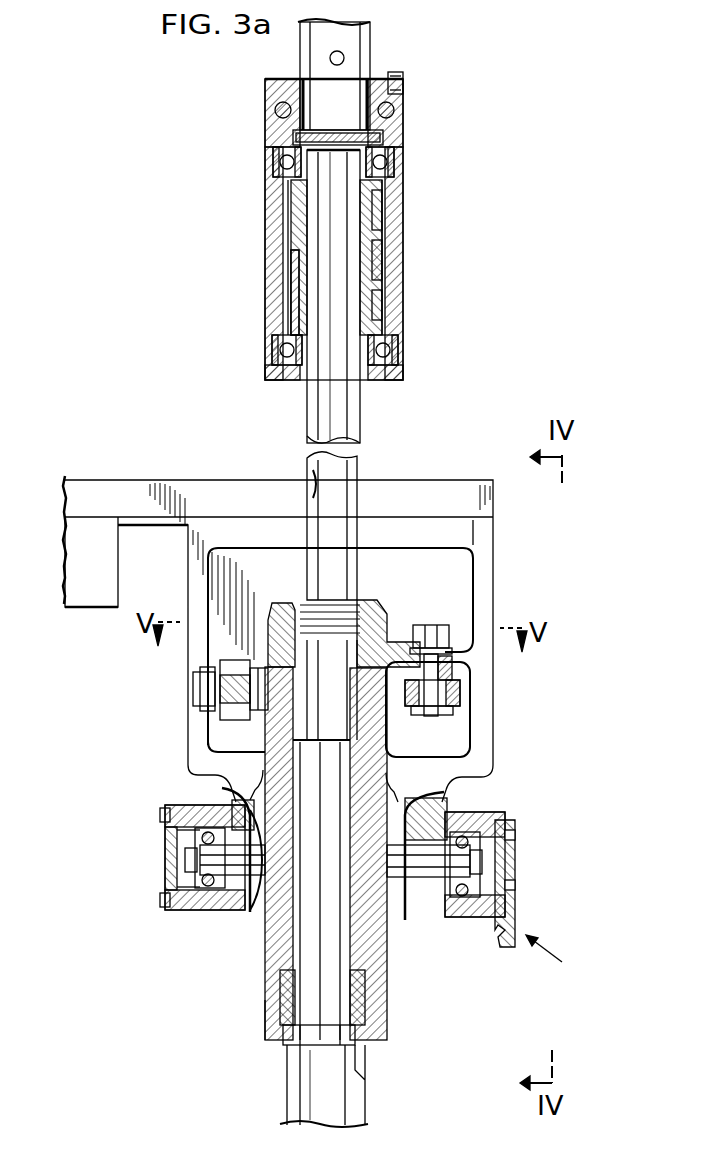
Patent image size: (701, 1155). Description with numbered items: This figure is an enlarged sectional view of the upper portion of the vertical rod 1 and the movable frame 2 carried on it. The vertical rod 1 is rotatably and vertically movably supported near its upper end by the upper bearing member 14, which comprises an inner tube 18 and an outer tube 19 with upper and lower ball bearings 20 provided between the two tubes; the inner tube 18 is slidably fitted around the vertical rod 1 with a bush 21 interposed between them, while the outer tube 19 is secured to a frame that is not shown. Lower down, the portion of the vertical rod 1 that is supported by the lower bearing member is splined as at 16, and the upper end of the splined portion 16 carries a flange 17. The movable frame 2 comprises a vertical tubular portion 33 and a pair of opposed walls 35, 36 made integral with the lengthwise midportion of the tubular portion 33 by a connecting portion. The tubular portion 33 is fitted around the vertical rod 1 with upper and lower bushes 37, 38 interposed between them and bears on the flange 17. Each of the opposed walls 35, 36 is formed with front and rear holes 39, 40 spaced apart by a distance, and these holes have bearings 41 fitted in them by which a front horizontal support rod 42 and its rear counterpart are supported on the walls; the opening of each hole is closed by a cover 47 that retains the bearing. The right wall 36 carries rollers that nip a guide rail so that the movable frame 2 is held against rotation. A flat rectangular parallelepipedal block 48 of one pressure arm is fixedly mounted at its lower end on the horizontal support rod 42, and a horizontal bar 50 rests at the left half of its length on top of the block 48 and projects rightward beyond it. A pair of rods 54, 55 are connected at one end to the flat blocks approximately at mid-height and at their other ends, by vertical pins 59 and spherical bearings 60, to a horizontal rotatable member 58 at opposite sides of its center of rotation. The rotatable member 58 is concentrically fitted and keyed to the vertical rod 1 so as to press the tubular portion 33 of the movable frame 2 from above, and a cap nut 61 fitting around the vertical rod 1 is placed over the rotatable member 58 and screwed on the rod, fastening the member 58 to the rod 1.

The vertical rod 1 is at (362, 426).
The movable frame 2 is at (553, 960).
The upper bearing member 14 is at (267, 223).
The splined portion 16 is at (286, 1094).
The flange 17 is at (326, 1042).
The inner tube 18 is at (391, 204).
The outer tube 19 is at (395, 243).
The ball bearings 20 is at (390, 355).
The bush 21 is at (362, 320).
The vertical tubular portion 33 is at (267, 986).
The opposed wall 35 is at (212, 912).
The right wall 36 is at (452, 917).
The upper bush 37 is at (473, 776).
The lower bush 38 is at (365, 990).
The front hole 39 is at (240, 907).
The rear hole 40 is at (476, 920).
The bearings 41 is at (224, 798).
The front horizontal support rod 42 is at (445, 870).
The cover 47 is at (187, 860).
The flat rectangular parallelepipedal block 48 is at (495, 584).
The horizontal bar 50 is at (222, 495).
The rod 54 is at (224, 694).
The rod 55 is at (448, 714).
The horizontal rotatable member 58 is at (402, 650).
The vertical pins 59 is at (459, 658).
The spherical bearings 60 is at (457, 693).
The cap nut 61 is at (378, 614).